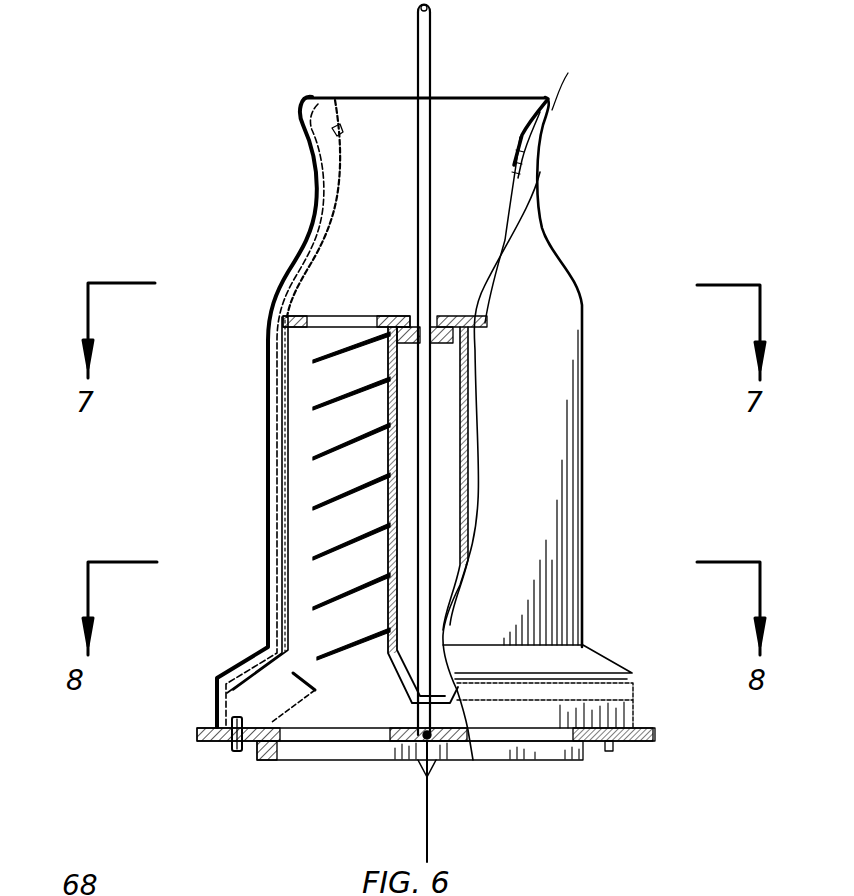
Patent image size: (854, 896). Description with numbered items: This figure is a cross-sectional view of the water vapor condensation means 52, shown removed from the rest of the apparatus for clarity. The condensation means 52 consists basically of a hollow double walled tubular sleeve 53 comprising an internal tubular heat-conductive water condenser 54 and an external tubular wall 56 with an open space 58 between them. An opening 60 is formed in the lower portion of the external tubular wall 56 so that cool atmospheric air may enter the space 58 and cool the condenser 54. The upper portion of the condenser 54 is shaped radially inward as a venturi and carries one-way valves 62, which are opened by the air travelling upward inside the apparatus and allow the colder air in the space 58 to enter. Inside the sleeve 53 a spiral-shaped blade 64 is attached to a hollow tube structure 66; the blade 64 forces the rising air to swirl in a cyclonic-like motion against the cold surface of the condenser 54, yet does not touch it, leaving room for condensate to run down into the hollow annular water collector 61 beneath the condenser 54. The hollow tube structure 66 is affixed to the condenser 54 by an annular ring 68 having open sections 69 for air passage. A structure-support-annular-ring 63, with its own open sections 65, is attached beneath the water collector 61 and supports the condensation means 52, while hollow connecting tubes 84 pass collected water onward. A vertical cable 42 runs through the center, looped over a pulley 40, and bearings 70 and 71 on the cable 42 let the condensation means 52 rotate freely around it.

The pulley 40 is at (432, 24).
The vertical cable 42 is at (424, 780).
The water vapor condensation means 52 is at (585, 445).
The hollow double walled tubular sleeve 53 is at (283, 445).
The internal tubular heat-conductive water condenser 54 is at (283, 392).
The external tubular wall 56 is at (267, 518).
The open space 58 is at (277, 560).
The opening 60 is at (172, 720).
The hollow annular water collector 61 is at (207, 733).
The one-way valve 62 is at (337, 127).
The structure-support-annular-ring 63 is at (263, 760).
The spiral-shaped blade 64 is at (320, 595).
The open sections 65 is at (323, 743).
The hollow tube structure 66 is at (467, 533).
The annular ring 68 is at (498, 262).
The open sections 69 is at (330, 245).
The bearing 70 is at (470, 336).
The bearing 71 is at (443, 763).
The hollow connecting tubes 84 is at (242, 752).